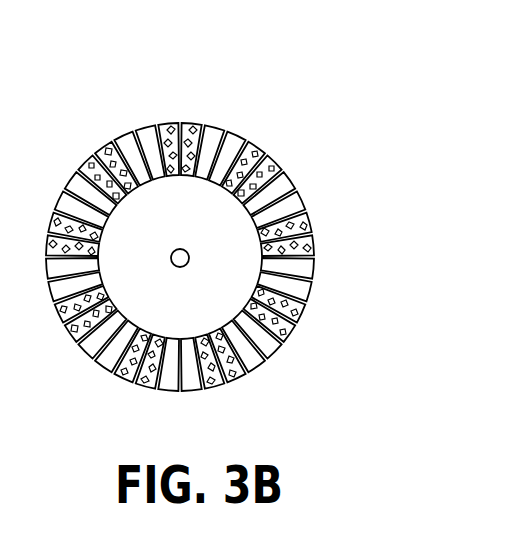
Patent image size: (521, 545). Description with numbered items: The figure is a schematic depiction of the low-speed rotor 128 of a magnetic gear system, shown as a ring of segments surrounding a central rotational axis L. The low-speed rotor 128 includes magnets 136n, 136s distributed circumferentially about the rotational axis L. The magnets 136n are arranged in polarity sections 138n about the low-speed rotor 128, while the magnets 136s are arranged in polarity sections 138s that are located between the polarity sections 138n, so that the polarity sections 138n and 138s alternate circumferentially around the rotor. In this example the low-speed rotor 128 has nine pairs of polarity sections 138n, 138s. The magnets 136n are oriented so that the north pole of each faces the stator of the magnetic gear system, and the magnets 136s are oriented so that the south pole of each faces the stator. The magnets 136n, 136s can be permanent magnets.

The low-speed rotor 128 is at (237, 84).
The magnets 136s is at (191, 126).
The magnets 136n is at (298, 290).
The polarity sections 138s is at (57, 317).
The polarity sections 138n is at (94, 375).
The rotational axis L is at (170, 271).